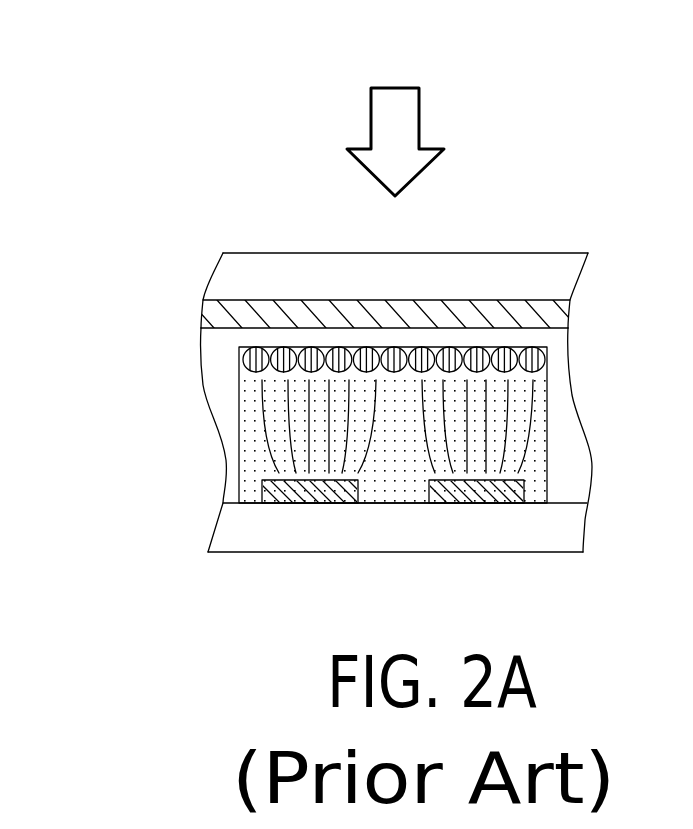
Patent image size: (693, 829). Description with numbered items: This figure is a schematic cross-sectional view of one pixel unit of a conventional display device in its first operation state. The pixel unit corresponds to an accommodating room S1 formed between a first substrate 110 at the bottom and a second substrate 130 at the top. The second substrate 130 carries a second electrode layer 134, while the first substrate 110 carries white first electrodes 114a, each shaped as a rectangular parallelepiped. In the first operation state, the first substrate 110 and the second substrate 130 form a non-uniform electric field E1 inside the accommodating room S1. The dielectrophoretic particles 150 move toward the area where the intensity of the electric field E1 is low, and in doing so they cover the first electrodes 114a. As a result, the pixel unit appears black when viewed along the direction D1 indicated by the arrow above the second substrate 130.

The second substrate 130 is at (202, 272).
The second electrode layer 134 is at (212, 312).
The first substrate 110 is at (205, 525).
The dielectrophoretic particles 150 is at (257, 350).
The first electrodes 114a is at (315, 496).
The electric field E1 is at (352, 384).
The accommodating room S1 is at (498, 398).
The viewing direction D1 is at (419, 113).